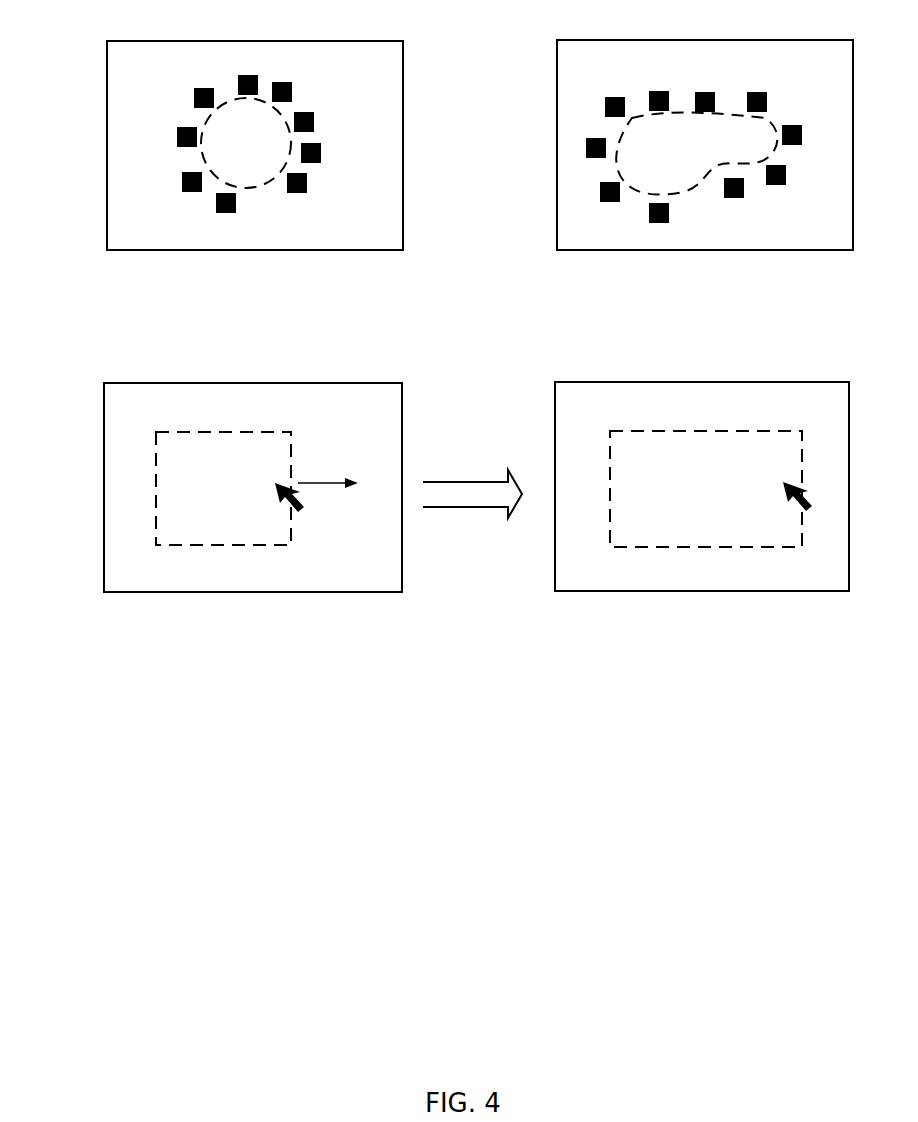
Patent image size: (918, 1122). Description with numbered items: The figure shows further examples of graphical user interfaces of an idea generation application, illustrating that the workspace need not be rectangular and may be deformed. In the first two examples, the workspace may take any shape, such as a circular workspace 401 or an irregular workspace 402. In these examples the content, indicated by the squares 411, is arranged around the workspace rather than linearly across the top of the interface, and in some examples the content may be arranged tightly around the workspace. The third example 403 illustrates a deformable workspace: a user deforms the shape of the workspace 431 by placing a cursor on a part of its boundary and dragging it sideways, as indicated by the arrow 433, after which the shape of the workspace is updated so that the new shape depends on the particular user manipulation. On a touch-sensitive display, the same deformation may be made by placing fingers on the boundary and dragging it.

The circular workspace 401 is at (265, 185).
The irregular workspace 402 is at (683, 193).
The workspace deformation example 403 is at (538, 630).
The squares 411 is at (177, 133).
The workspace 431 is at (198, 543).
The arrow 433 is at (310, 483).